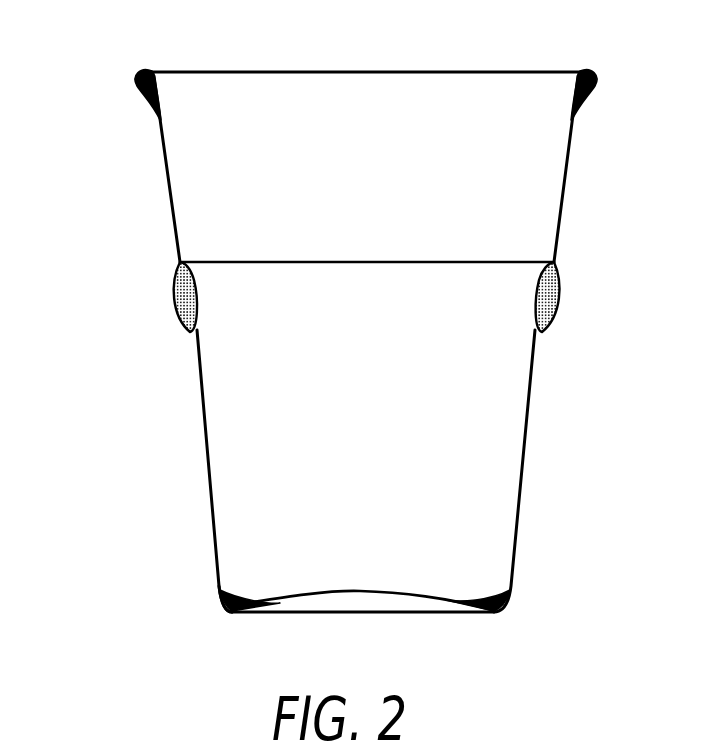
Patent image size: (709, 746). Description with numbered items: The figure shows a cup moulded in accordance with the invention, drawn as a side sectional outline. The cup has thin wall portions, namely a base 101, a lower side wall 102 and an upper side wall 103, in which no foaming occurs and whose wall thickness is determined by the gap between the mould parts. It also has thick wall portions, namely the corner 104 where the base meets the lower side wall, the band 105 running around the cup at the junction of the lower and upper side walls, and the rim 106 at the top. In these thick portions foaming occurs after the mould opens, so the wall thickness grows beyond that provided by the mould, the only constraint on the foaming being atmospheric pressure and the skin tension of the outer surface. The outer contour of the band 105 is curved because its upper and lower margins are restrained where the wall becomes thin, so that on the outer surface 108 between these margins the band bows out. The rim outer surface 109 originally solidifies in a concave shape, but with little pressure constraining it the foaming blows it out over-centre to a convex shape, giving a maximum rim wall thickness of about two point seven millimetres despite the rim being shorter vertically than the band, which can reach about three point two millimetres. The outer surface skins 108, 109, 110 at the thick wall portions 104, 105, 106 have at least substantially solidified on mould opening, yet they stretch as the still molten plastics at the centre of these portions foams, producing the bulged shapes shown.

The base 101 is at (388, 593).
The lower side wall 102 is at (525, 470).
The upper side wall 103 is at (566, 197).
The corner 104 is at (228, 604).
The band 105 is at (560, 298).
The rim 106 is at (600, 78).
The outer surface 108 is at (233, 613).
The rim outer surface 109 is at (173, 297).
The outer surface skin 110 is at (138, 88).